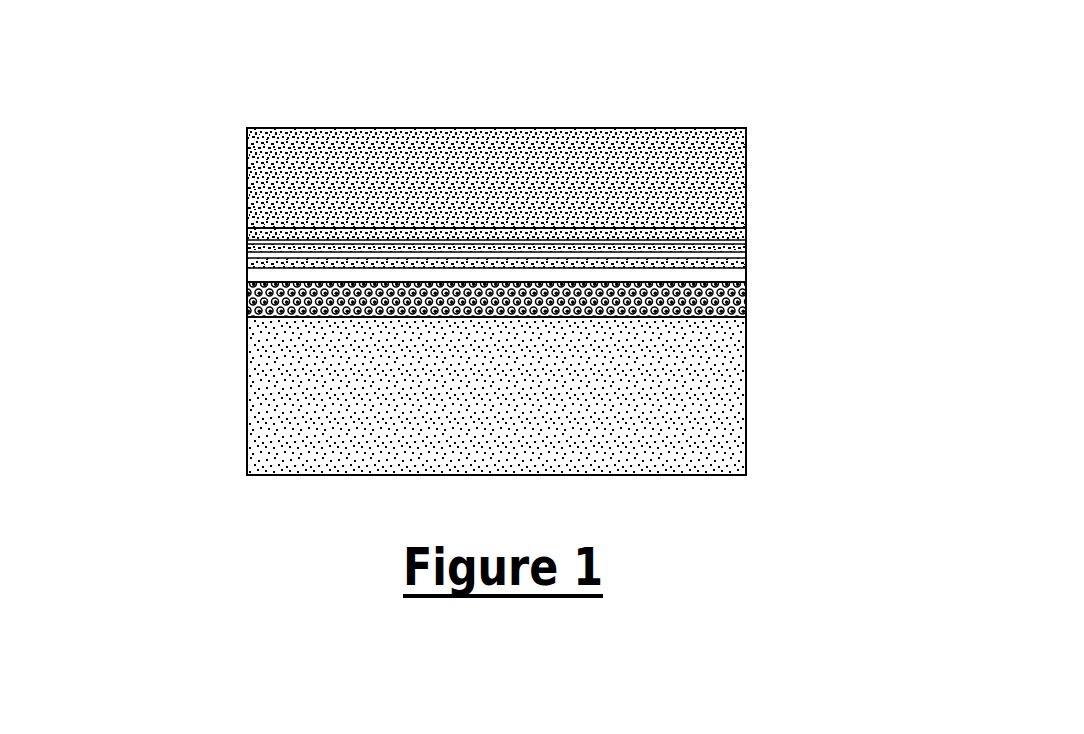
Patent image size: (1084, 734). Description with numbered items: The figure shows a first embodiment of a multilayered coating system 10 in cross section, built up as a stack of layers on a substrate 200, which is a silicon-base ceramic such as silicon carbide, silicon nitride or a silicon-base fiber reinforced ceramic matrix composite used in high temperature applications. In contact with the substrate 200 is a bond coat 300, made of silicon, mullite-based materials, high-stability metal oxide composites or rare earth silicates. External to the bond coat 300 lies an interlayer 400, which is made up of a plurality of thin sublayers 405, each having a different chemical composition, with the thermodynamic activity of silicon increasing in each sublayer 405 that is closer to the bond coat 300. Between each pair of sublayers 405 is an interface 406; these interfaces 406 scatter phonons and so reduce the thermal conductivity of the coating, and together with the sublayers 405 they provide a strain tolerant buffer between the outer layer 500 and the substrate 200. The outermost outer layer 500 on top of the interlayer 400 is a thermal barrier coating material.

The multilayered coating system 10 is at (786, 104).
The substrate 200 is at (533, 422).
The bond coat 300 is at (337, 296).
The interlayer 400 is at (470, 230).
The sublayers 405 is at (282, 263).
The interfaces 406 is at (345, 276).
The outer layer 500 is at (533, 205).